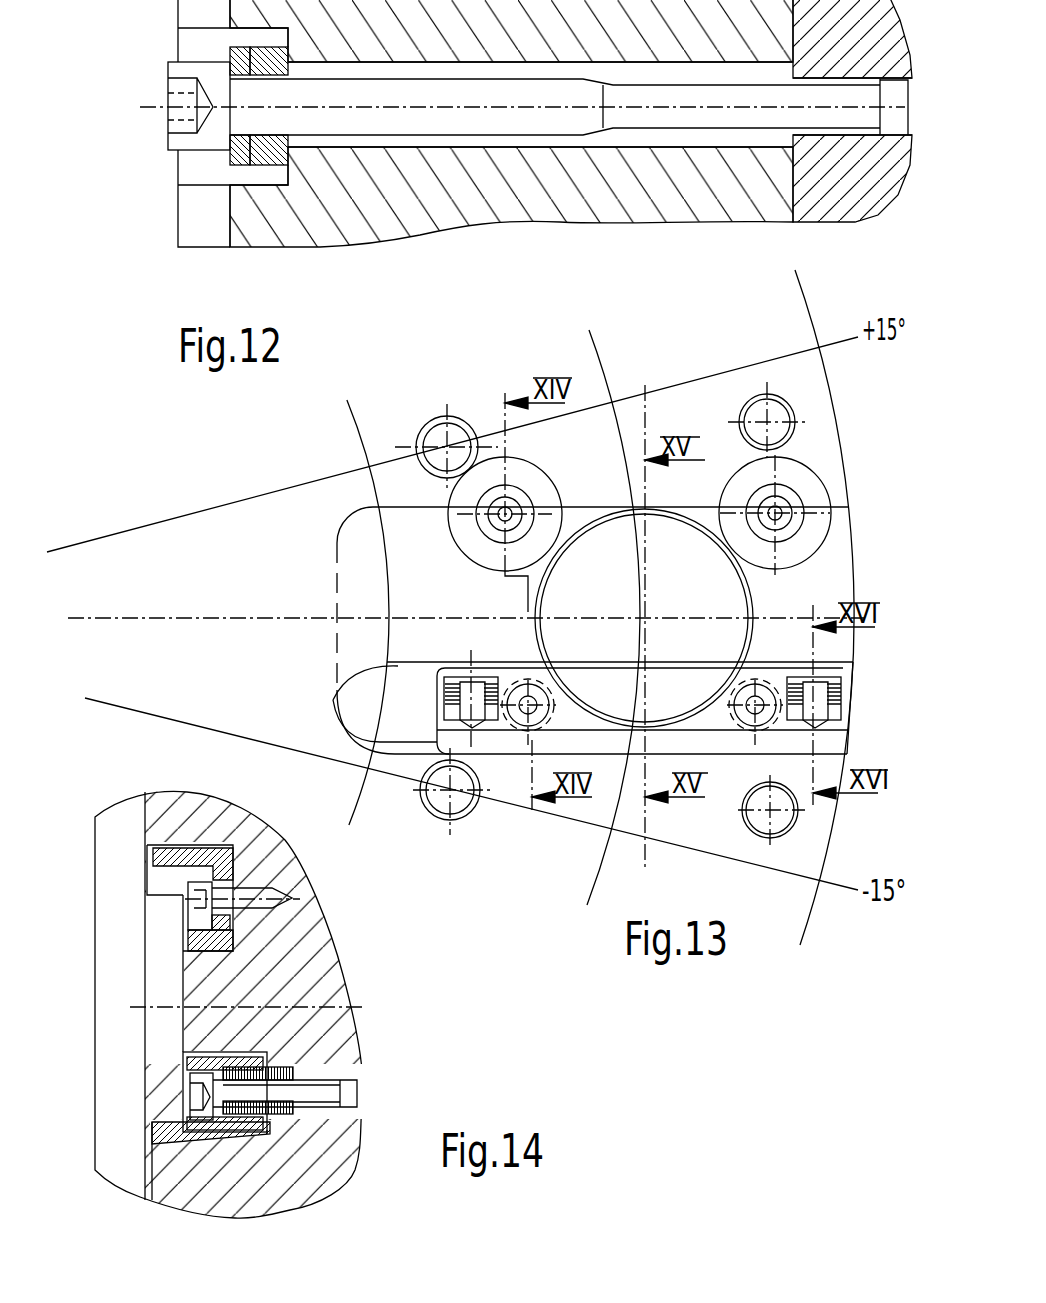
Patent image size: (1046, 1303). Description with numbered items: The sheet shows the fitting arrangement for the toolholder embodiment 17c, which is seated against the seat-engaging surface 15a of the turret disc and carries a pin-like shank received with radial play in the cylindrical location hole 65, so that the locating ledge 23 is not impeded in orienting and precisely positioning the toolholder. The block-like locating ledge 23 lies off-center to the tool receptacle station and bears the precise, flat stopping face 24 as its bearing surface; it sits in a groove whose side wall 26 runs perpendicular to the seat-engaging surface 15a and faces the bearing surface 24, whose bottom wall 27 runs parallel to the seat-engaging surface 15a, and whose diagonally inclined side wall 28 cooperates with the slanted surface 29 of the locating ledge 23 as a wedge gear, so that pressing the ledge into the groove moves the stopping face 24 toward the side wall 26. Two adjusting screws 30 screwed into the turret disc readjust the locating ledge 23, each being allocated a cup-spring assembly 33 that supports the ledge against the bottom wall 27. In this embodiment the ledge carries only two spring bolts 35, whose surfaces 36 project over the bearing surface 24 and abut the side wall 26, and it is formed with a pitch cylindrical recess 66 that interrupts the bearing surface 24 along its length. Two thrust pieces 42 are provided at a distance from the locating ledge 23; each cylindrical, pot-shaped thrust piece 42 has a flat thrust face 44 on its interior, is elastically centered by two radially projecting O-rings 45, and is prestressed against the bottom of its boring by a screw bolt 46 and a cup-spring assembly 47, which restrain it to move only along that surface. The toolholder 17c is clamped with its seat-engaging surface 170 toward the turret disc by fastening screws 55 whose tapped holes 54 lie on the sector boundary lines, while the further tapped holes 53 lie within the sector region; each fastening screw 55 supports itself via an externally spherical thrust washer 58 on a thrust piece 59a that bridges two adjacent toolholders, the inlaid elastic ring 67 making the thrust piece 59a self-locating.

In FIG. 12, the toolholder 17c is at (562, 200).
In FIG. 12, the inlaid elastic ring 67 is at (293, 150).
In FIG. 12, the tapped holes 54 is at (903, 123).
In FIG. 13, the tapped holes 54 is at (453, 430).
In FIG. 12, the fastening screws 55 is at (177, 143).
In FIG. 12, the thrust washer 58 is at (232, 158).
In FIG. 12, the thrust piece 59a is at (262, 167).
In FIG. 13, the location hole 65 is at (600, 822).
In FIG. 13, the seat-engaging surface 15a is at (835, 552).
In FIG. 14, the seat-engaging surface 15a is at (143, 822).
In FIG. 13, the side wall 26 is at (340, 690).
In FIG. 13, the bottom wall 27 is at (350, 690).
In FIG. 13, the side wall 28 is at (395, 748).
In FIG. 14, the side wall 28 is at (247, 1142).
In FIG. 13, the tapped holes 53 is at (780, 410).
In FIG. 13, the pitch cylindrical recess 66 is at (700, 715).
In FIG. 13, the stopping face 24 is at (768, 657).
In FIG. 14, the stopping face 24 is at (165, 1118).
In FIG. 13, the locating ledge 23 is at (838, 717).
In FIG. 14, the locating ledge 23 is at (240, 1147).
In FIG. 13, the surface 36 is at (470, 677).
In FIG. 13, the spring bolts 35 is at (828, 678).
In FIG. 14, the seat-engaging surface 170 is at (148, 1172).
In FIG. 14, the thrust piece 42 is at (144, 902).
In FIG. 14, the thrust face 44 is at (170, 897).
In FIG. 14, the O-rings 45 is at (225, 845).
In FIG. 14, the screw bolt 46 is at (257, 887).
In FIG. 14, the cup-spring assembly 47 is at (237, 923).
In FIG. 14, the slanted surface 29 is at (182, 1150).
In FIG. 14, the adjusting screws 30 is at (190, 1073).
In FIG. 14, the cup-spring assembly 33 is at (357, 1106).